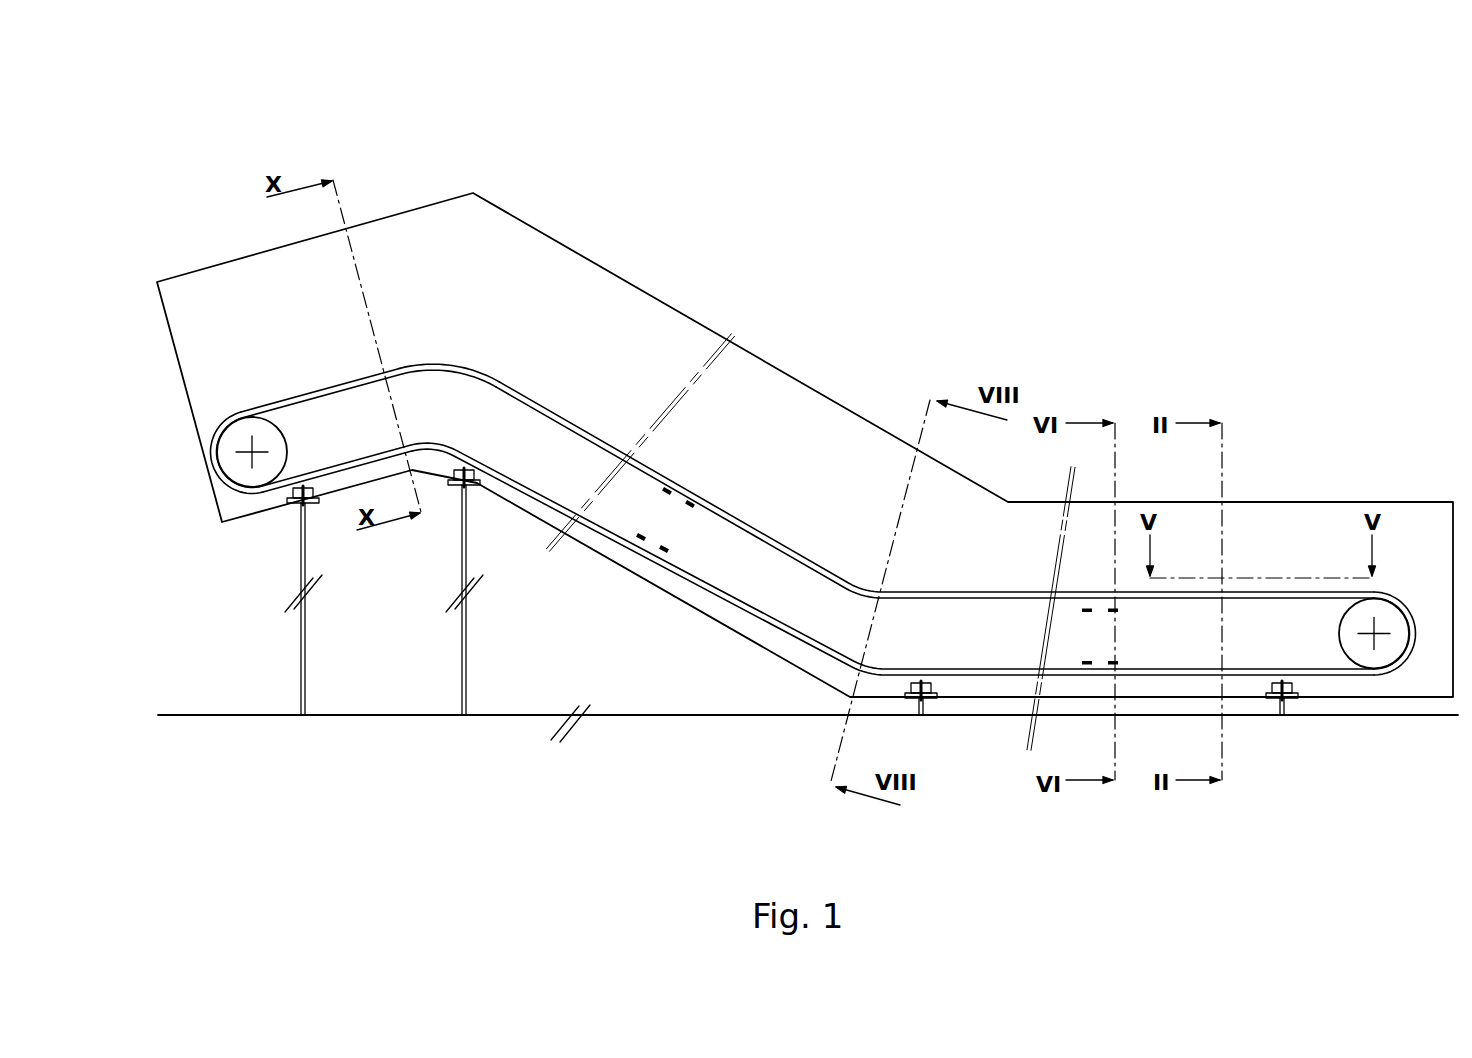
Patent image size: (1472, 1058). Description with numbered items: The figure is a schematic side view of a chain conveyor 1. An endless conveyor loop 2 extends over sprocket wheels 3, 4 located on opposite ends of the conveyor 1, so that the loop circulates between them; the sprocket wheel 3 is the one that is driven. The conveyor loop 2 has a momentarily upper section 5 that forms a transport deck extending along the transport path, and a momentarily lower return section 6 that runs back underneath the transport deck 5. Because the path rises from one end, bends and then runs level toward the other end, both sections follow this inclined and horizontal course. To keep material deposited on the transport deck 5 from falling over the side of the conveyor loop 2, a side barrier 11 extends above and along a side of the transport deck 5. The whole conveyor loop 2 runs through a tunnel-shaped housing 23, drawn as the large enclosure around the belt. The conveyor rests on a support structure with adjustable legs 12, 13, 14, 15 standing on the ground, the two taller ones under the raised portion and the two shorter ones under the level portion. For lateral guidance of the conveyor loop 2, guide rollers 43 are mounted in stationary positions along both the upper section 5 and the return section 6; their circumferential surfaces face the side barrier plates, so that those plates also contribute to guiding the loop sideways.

The chain conveyor 1 is at (905, 295).
The conveyor loop 2 is at (752, 497).
The sprocket wheel 3 is at (1358, 650).
The sprocket wheel 4 is at (256, 437).
The upper section 5 is at (800, 553).
The lower return section 6 is at (817, 648).
The side barrier 11 is at (533, 397).
The adjustable leg 12 is at (313, 670).
The adjustable leg 13 is at (474, 661).
The adjustable leg 14 is at (932, 766).
The adjustable leg 15 is at (1292, 766).
The tunnel-shaped housing 23 is at (480, 284).
The guide rollers 43 is at (667, 490).